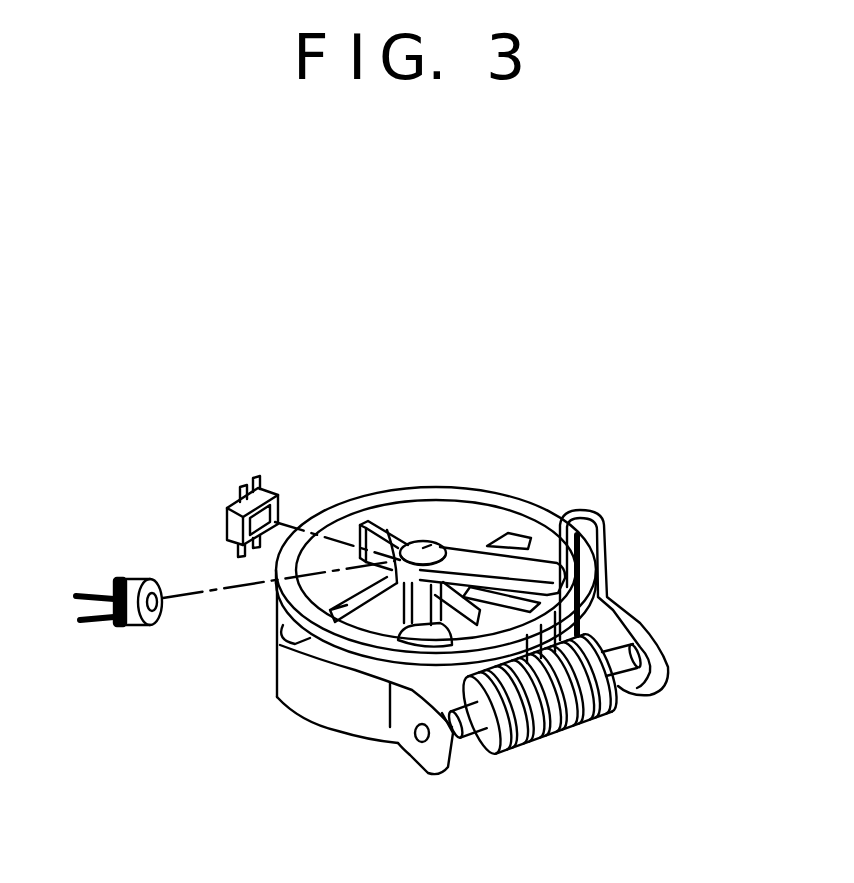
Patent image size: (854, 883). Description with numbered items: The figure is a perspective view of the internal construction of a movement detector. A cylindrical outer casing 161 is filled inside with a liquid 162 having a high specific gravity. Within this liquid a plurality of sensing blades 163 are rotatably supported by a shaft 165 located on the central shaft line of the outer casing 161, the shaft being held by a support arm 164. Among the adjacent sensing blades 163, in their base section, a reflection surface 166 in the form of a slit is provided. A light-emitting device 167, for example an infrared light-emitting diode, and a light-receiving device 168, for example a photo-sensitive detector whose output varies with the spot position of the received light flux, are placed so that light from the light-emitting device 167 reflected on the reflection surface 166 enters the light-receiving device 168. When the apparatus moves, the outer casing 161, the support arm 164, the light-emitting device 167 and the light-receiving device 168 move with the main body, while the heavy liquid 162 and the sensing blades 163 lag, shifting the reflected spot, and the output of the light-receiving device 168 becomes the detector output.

The outer casing 161 is at (505, 495).
The liquid 162 is at (453, 503).
The sensing blades 163 is at (386, 524).
The support arm 164 is at (580, 567).
The shaft 165 is at (433, 552).
The reflection surface 166 is at (387, 596).
The light-emitting device 167 is at (138, 625).
The light-receiving device 168 is at (228, 504).